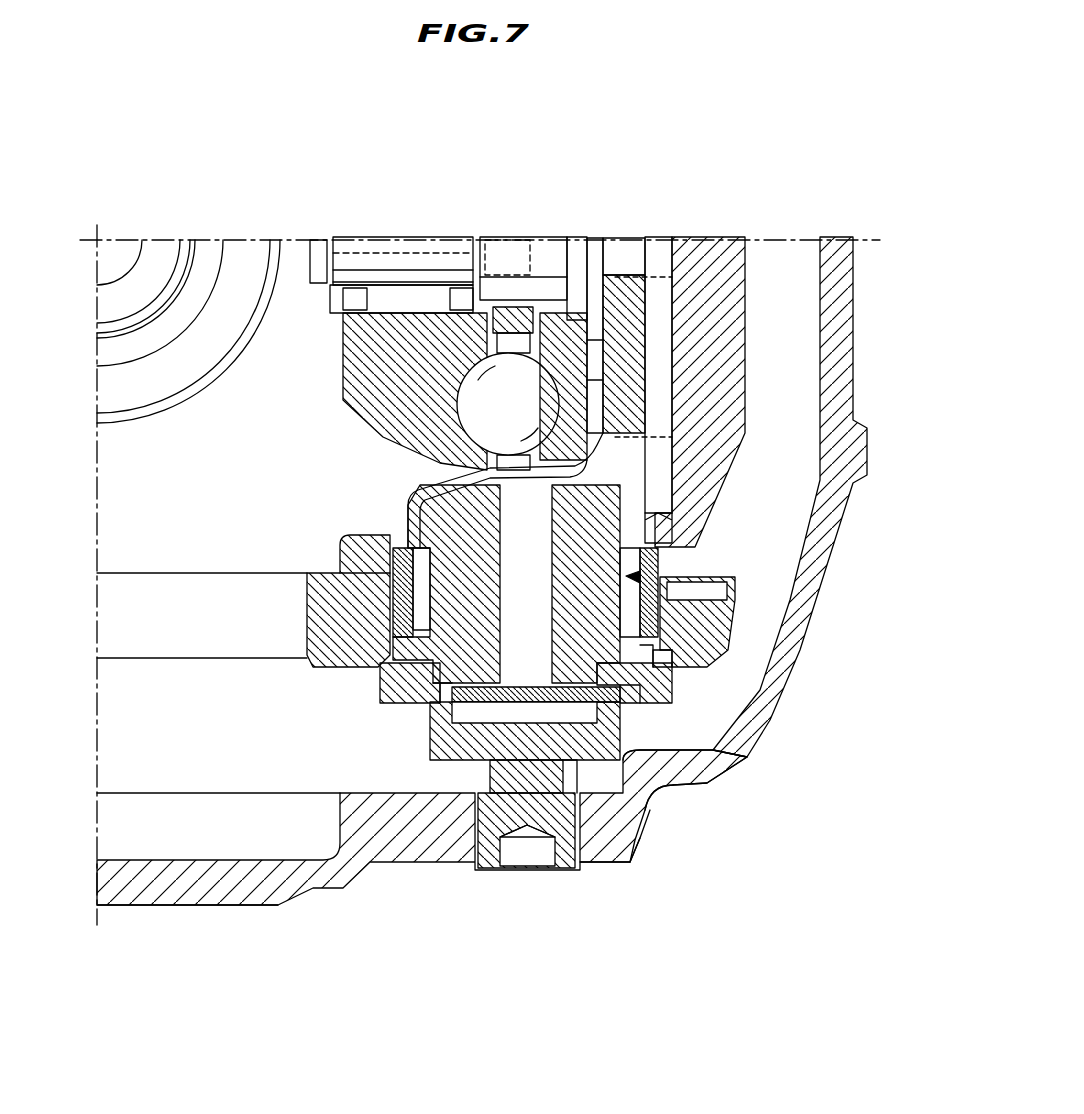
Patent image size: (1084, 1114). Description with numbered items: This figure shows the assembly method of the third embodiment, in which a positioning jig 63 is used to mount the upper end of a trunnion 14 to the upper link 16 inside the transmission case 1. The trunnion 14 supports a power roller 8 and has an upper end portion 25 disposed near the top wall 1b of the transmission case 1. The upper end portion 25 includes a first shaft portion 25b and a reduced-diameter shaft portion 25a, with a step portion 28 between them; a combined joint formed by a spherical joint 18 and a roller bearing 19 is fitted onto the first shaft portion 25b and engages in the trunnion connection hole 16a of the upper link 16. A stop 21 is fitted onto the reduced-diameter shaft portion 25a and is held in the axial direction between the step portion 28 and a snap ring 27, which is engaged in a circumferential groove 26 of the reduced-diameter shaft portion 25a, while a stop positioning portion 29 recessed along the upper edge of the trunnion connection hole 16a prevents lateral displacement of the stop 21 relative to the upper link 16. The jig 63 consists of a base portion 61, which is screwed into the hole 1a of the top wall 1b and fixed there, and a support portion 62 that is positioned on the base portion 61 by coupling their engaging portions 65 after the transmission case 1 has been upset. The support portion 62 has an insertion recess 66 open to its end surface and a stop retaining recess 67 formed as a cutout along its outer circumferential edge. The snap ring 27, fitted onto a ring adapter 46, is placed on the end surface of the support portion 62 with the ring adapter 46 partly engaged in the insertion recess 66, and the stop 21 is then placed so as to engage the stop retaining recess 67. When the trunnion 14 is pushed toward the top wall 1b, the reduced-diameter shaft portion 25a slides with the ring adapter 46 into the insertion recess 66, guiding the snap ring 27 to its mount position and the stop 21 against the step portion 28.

The transmission case 1 is at (206, 910).
The hole 1a is at (574, 870).
The top wall 1b is at (262, 907).
The power roller 8 is at (347, 400).
The trunnion 14 is at (702, 502).
The upper link 16 is at (655, 660).
The trunnion connection hole 16a is at (668, 662).
The spherical joint 18 is at (695, 638).
The roller bearing 19 is at (625, 563).
The stop 21 is at (648, 705).
The upper end portion 25 is at (648, 576).
The reduced-diameter shaft portion 25a is at (642, 690).
The first shaft portion 25b is at (680, 600).
The circumferential groove 26 is at (702, 753).
The snap ring 27 is at (703, 770).
The step portion 28 is at (322, 613).
The stop positioning portion 29 is at (312, 652).
The ring adapter 46 is at (662, 792).
The base portion 61 is at (480, 835).
The support portion 62 is at (440, 747).
The positioning jig 63 is at (435, 785).
The engaging portion 65 is at (553, 772).
The insertion recess 66 is at (630, 842).
The stop retaining recess 67 is at (385, 690).